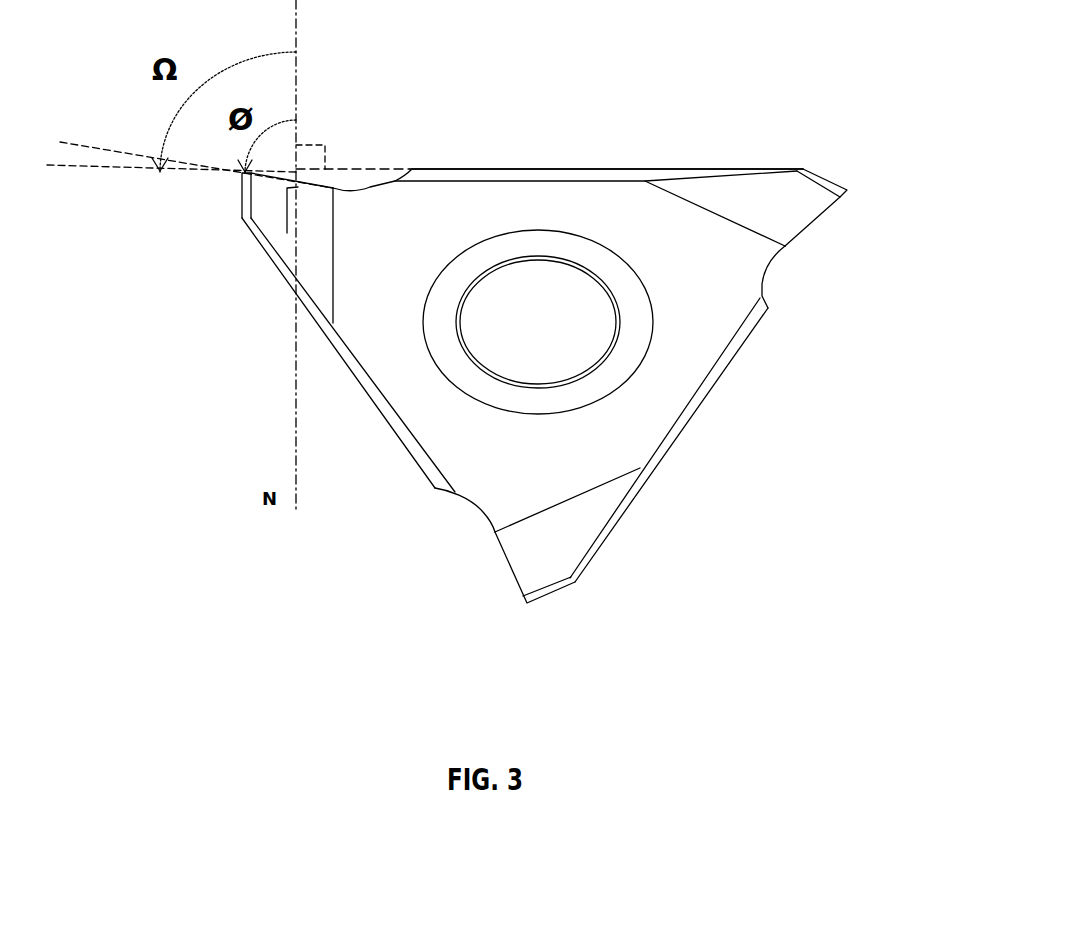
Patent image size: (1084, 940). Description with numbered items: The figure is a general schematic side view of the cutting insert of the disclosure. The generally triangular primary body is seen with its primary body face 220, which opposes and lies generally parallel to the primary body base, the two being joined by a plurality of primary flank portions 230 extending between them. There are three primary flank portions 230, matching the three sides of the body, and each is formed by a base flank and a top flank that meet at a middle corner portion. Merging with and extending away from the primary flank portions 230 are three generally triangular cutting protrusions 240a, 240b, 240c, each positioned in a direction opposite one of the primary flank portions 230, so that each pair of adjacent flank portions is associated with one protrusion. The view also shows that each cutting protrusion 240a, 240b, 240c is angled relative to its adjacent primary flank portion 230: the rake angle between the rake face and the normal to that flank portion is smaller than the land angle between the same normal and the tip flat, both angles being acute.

The primary body face 220 is at (713, 329).
The primary flank portion 230 is at (520, 169).
The cutting protrusion 240a is at (232, 230).
The cutting protrusion 240b is at (500, 571).
The cutting protrusion 240c is at (840, 170).